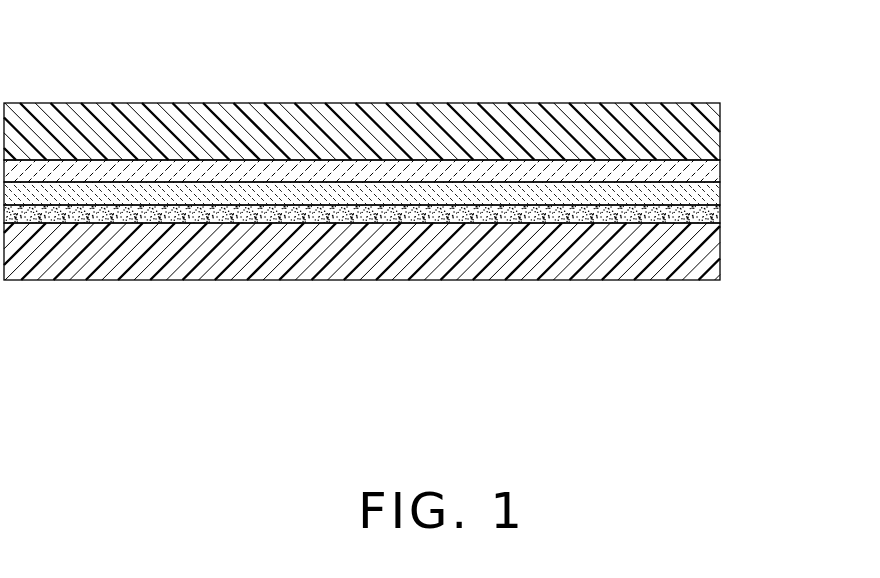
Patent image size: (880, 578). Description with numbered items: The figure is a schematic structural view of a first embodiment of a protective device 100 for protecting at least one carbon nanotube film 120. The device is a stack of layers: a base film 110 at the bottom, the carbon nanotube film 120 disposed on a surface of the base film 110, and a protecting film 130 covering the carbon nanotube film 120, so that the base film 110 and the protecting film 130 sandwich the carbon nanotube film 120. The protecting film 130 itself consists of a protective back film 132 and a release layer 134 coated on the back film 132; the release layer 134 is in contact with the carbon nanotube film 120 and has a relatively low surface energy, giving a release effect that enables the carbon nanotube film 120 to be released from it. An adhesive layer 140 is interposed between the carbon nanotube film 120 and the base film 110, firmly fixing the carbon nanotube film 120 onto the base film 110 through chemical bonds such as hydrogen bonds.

The protective device 100 is at (398, 59).
The base film 110 is at (700, 252).
The carbon nanotube film 120 is at (705, 192).
The protecting film 130 is at (440, 142).
The protective back film 132 is at (700, 131).
The release layer 134 is at (712, 173).
The adhesive layer 140 is at (702, 213).